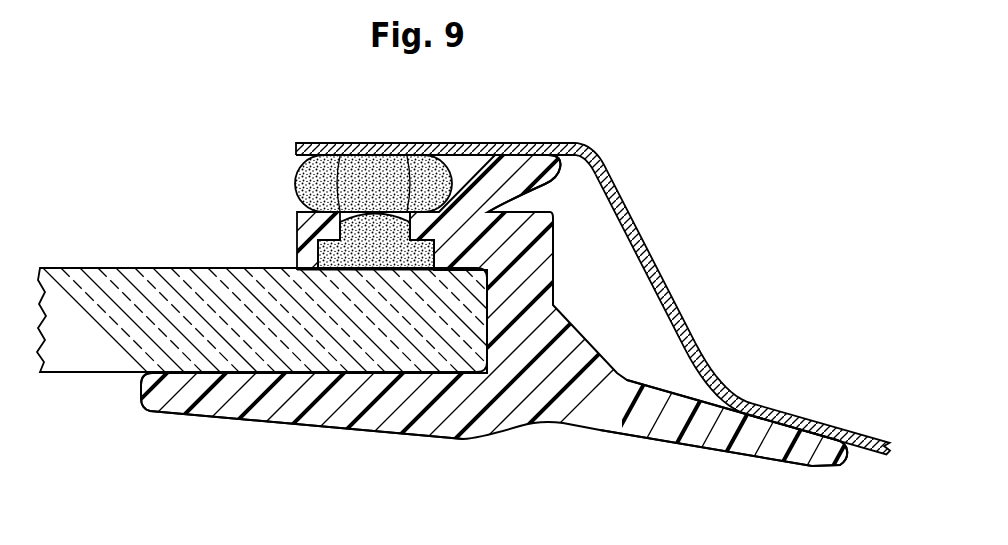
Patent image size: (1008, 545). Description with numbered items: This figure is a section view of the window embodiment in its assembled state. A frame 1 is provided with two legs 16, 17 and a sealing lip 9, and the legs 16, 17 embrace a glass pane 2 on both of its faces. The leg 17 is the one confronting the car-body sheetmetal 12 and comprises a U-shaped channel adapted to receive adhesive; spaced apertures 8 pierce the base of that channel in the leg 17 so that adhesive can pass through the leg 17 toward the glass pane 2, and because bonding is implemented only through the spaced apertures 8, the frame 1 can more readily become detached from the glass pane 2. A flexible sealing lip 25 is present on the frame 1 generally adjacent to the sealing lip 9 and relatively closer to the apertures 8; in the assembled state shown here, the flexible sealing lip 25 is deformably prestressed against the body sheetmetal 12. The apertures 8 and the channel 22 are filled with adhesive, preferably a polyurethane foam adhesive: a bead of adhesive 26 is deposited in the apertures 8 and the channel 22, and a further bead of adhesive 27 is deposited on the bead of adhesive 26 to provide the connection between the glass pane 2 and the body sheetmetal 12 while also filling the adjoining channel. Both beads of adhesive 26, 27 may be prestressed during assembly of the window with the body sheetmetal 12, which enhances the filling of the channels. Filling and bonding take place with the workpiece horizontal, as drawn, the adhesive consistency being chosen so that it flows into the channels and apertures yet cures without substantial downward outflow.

The frame 1 is at (541, 432).
The glass pane 2 is at (80, 350).
The apertures 8 is at (401, 192).
The sealing lip 9 is at (745, 437).
The car-body sheetmetal 12 is at (673, 286).
The leg 16 is at (243, 393).
The leg 17 is at (521, 210).
The channel 22 is at (377, 267).
The flexible sealing lip 25 is at (503, 166).
The bead of adhesive 26 is at (296, 238).
The further bead of adhesive 27 is at (341, 158).